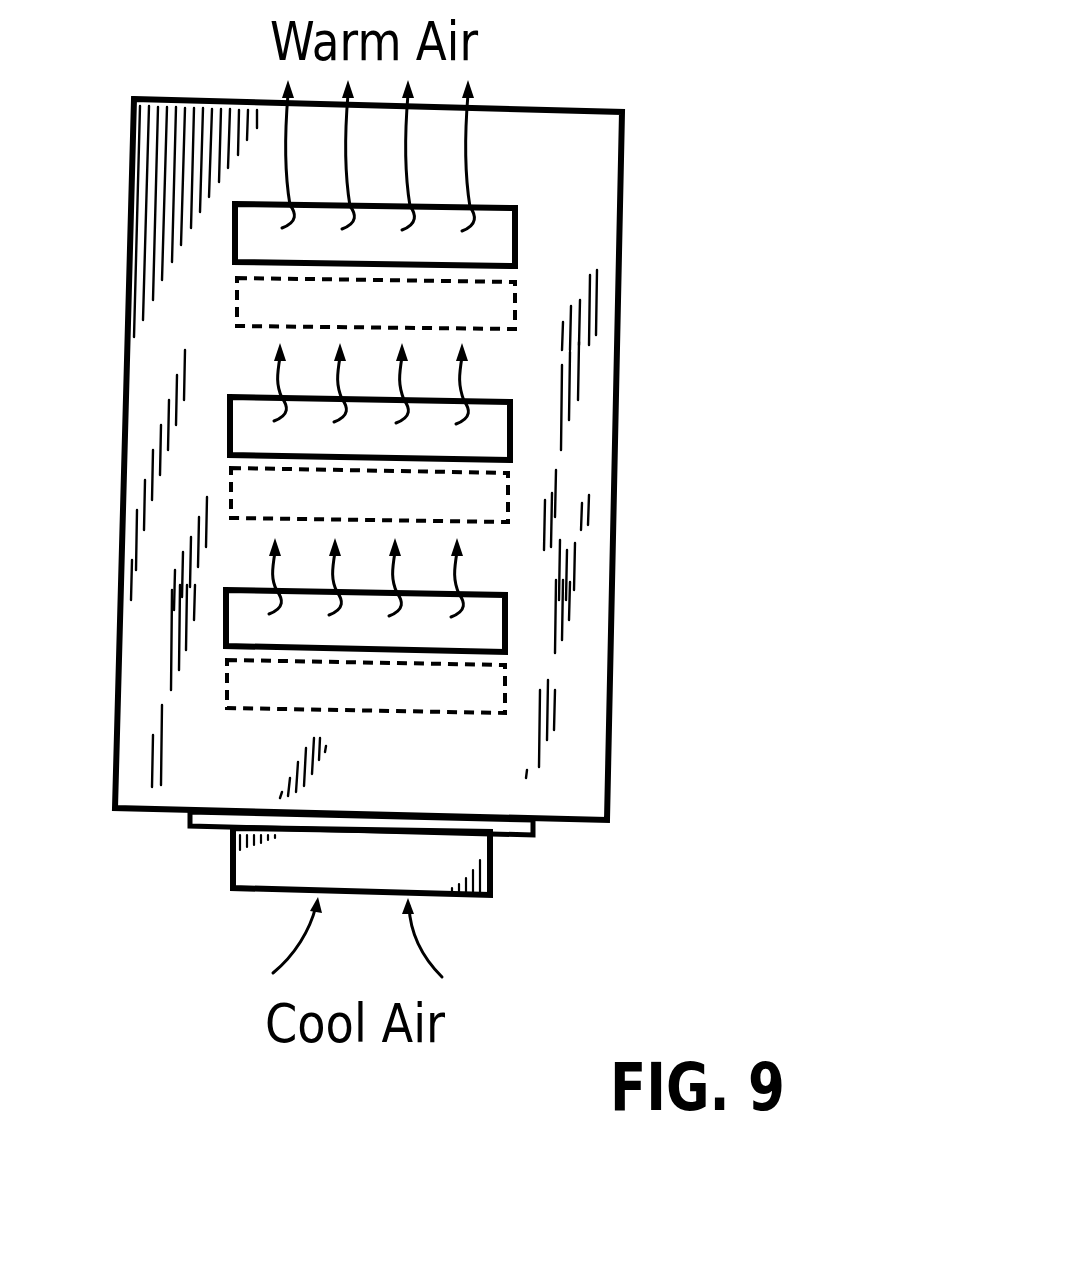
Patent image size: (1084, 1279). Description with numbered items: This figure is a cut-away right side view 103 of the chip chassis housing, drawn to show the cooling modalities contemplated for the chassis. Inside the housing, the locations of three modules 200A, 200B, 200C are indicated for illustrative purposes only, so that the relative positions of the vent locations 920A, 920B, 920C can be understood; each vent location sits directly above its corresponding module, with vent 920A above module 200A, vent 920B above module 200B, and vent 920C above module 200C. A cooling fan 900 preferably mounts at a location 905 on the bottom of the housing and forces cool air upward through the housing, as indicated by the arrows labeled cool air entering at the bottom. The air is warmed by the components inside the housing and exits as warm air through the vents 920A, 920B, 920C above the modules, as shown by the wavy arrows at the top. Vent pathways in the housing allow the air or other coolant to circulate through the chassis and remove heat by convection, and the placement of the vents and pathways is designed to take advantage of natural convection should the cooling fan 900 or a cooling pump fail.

The cut-away right side view 103 is at (612, 253).
The vent location 920A is at (490, 203).
The module 200A is at (530, 308).
The vent location 920B is at (485, 400).
The module 200B is at (522, 492).
The vent location 920C is at (480, 588).
The module 200C is at (518, 698).
The location 905 is at (525, 805).
The cooling fan 900 is at (460, 897).